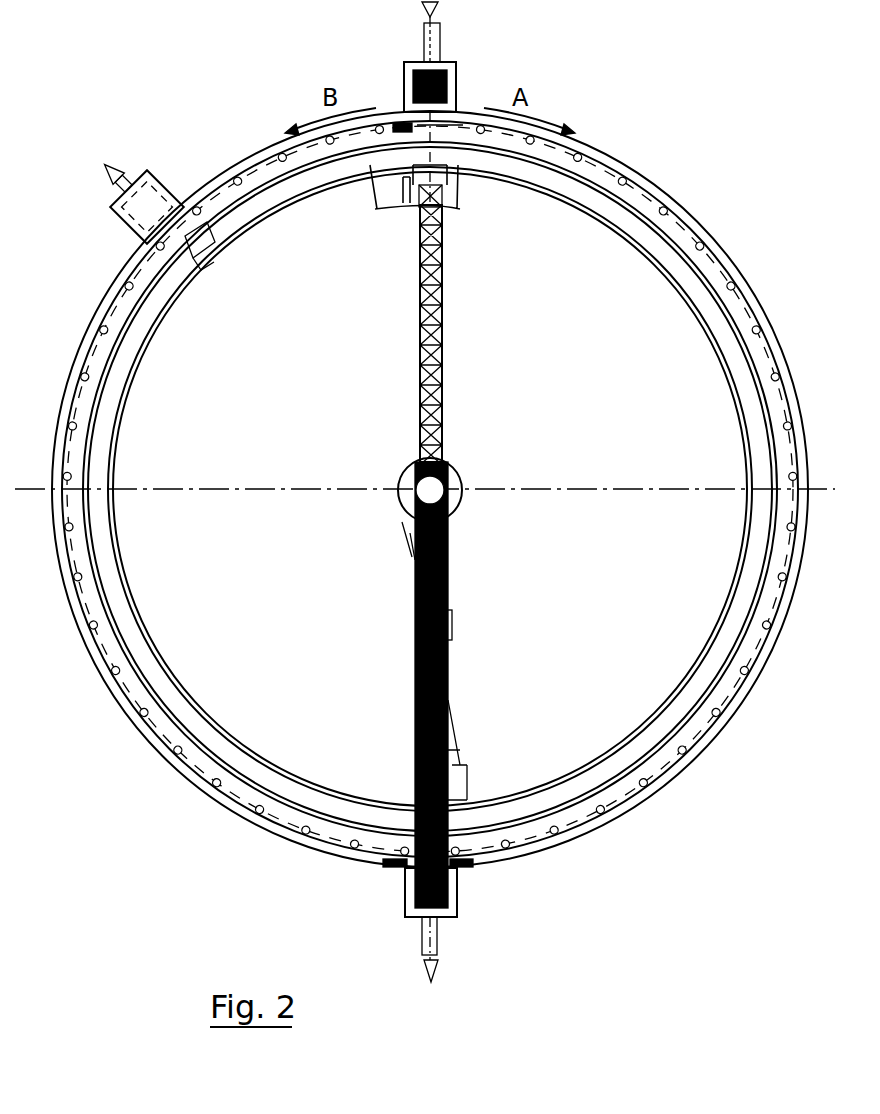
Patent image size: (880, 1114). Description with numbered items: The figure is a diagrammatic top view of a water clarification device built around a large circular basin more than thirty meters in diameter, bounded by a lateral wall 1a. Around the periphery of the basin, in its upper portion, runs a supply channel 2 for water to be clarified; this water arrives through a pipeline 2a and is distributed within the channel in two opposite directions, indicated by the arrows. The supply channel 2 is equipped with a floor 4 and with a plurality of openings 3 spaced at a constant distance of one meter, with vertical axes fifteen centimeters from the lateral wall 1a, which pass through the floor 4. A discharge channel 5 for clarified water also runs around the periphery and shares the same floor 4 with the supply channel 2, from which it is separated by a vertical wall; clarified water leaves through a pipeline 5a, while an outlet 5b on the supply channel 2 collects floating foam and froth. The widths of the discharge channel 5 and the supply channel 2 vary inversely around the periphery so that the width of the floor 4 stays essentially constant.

The lateral wall 1a is at (588, 147).
The supply channel 2 is at (600, 173).
The pipeline 2a is at (423, 45).
The openings 3 is at (675, 238).
The floor 4 is at (697, 277).
The channel 5 is at (727, 260).
The pipeline 5a is at (133, 178).
The outlet 5b is at (440, 930).